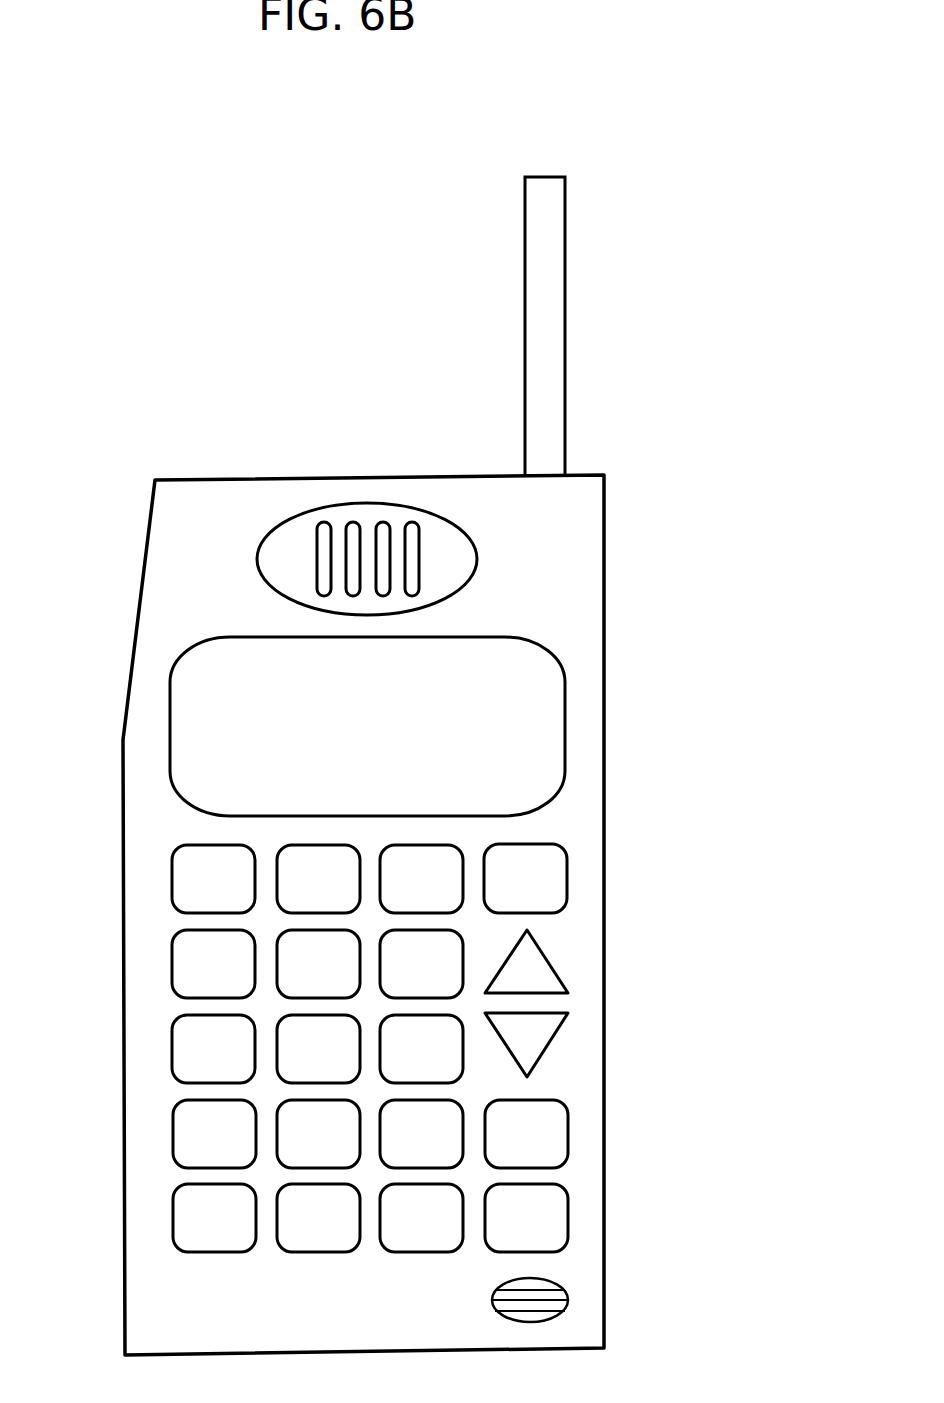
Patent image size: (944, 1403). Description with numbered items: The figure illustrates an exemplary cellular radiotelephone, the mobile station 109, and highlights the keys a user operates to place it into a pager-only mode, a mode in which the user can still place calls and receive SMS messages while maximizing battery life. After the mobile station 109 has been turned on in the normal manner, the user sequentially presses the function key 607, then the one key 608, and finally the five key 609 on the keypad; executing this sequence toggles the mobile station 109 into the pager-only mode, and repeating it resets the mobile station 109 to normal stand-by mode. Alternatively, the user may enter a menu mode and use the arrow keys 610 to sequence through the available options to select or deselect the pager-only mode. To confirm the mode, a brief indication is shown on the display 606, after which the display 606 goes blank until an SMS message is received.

The mobile station 109 is at (128, 438).
The display 606 is at (566, 707).
The function key 607 is at (320, 845).
The '1' key 608 is at (172, 963).
The '5' key 609 is at (280, 1061).
The arrow keys 610 is at (550, 960).